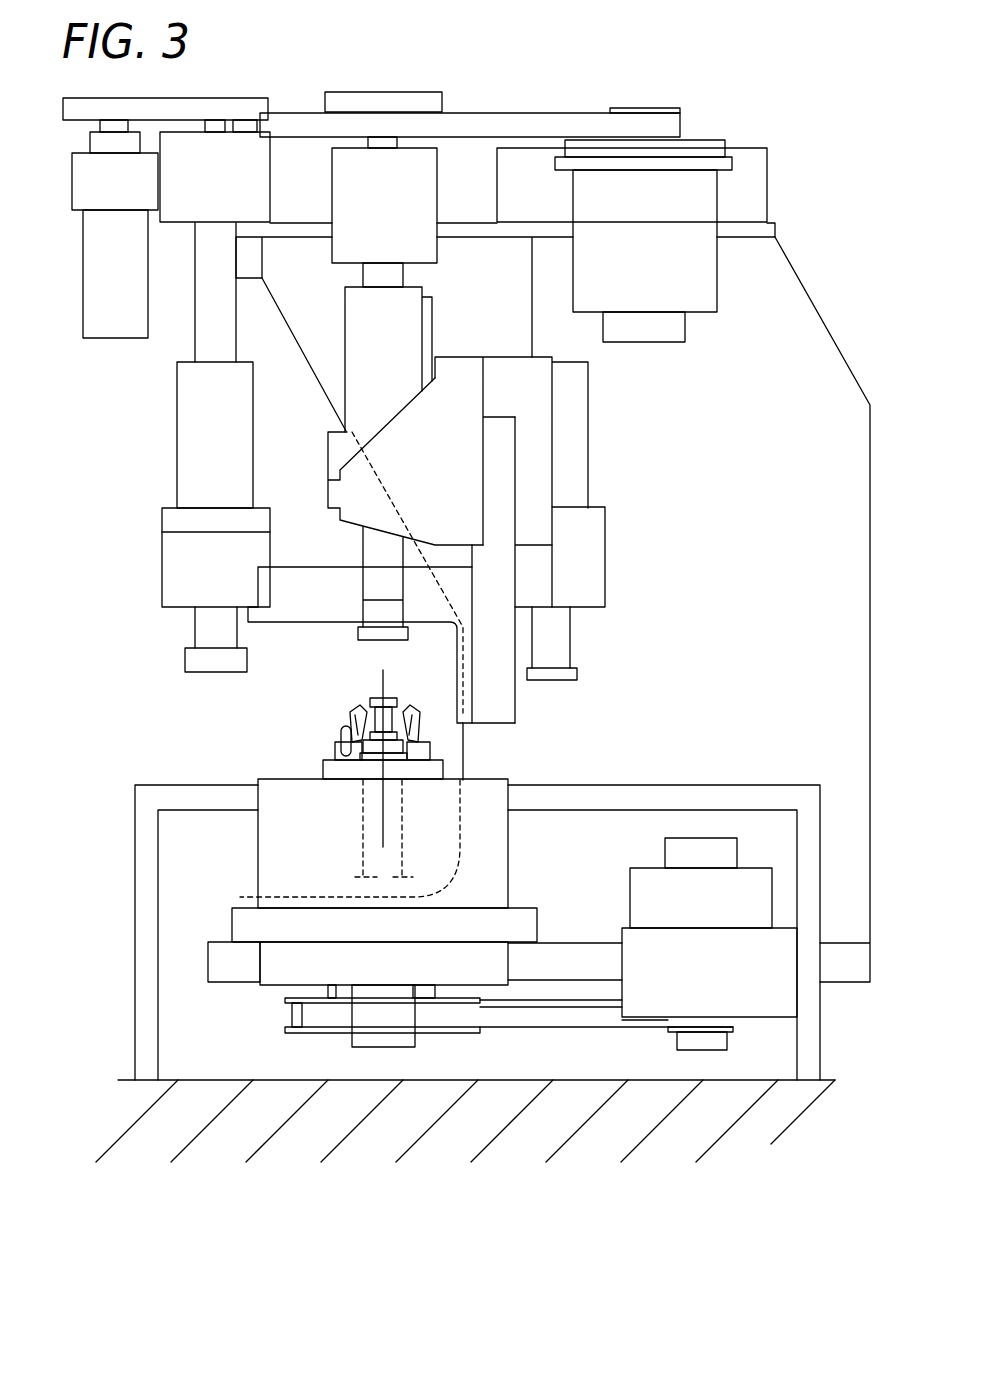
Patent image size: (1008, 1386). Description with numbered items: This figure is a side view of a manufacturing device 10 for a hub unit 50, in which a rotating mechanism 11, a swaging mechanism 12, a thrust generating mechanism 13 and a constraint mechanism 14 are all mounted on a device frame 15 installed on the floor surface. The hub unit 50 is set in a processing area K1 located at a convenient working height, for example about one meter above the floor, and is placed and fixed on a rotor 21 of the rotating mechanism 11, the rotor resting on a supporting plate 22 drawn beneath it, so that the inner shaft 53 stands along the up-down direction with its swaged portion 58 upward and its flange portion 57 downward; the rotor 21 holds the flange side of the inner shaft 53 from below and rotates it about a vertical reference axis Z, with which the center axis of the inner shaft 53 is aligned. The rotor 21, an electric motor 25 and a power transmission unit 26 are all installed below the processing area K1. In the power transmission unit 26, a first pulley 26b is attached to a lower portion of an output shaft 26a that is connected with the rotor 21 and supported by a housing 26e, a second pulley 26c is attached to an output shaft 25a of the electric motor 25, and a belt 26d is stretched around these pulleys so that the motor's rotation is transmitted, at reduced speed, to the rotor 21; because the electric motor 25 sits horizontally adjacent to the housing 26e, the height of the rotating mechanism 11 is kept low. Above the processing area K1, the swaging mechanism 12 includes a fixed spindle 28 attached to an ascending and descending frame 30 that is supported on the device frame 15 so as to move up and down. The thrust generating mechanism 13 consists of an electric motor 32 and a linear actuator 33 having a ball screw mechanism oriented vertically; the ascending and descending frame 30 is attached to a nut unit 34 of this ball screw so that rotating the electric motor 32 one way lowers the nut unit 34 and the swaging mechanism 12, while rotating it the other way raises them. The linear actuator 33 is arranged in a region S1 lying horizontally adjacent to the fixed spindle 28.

The manufacturing device 10 is at (57, 238).
The electric motor 32 is at (100, 271).
The linear actuator 33 is at (180, 397).
The thrust generating mechanism 13 is at (165, 447).
The nut unit 34 is at (180, 563).
The region S1 is at (134, 621).
The device frame 15 is at (802, 373).
The fixed spindle 28 is at (360, 605).
The constraint mechanism 14 is at (343, 640).
The ascending and descending frame 30 is at (262, 623).
The swaging mechanism 12 is at (410, 647).
The reference axis Z is at (380, 847).
The swaged portion 58 is at (368, 704).
The inner shaft 53 is at (403, 698).
The rotor 21 is at (347, 768).
The processing area K1 is at (327, 727).
The flange portion 57 is at (343, 735).
The hub unit 50 is at (420, 727).
The table plate 22 is at (337, 751).
The housing 26e is at (508, 870).
The output shaft 26a is at (362, 843).
The rotating mechanism 11 is at (280, 1000).
The power transmission unit 26 is at (245, 968).
The first pulley 26b is at (327, 1035).
The belt 26d is at (548, 1029).
The electric motor 25 is at (755, 993).
The second pulley 26c is at (668, 1034).
The output shaft 25a is at (702, 1052).